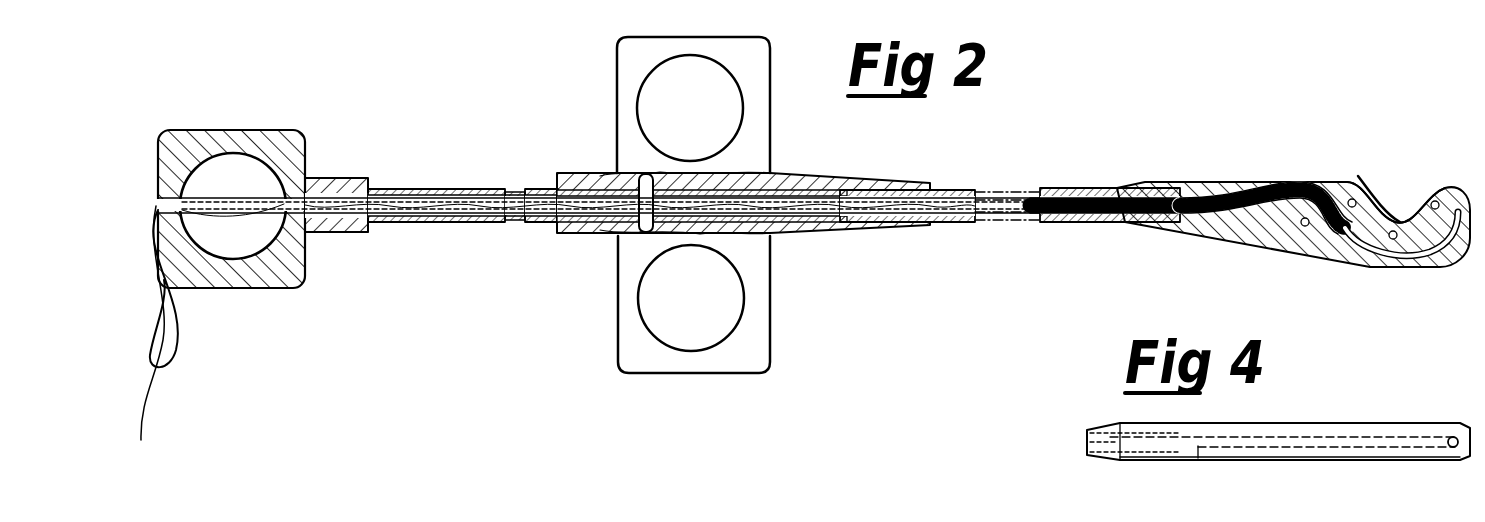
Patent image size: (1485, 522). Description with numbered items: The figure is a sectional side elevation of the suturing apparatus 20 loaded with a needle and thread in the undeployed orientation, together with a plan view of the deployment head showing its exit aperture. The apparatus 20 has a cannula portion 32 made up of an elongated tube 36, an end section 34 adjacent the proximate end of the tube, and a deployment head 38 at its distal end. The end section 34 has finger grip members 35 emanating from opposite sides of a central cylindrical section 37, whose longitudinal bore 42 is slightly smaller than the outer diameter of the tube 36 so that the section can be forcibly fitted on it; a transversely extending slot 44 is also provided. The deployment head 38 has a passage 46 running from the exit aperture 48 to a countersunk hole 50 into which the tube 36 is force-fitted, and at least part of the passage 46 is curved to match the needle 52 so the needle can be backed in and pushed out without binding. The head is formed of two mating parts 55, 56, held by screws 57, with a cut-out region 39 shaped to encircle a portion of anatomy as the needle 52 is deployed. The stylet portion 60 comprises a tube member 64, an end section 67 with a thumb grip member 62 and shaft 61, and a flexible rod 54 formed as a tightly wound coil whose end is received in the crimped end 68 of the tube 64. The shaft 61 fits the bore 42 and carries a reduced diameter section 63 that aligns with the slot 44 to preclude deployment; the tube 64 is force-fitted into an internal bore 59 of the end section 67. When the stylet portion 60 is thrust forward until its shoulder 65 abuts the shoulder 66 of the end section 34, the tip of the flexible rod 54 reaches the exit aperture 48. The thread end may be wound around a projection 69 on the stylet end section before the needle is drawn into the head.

In FIG. 2, the apparatus 20 is at (422, 343).
In FIG. 2, the cannula portion 32 is at (998, 142).
In FIG. 2, the end section 34 is at (596, 138).
In FIG. 2, the finger grip members 35 is at (770, 150).
In FIG. 2, the elongated tube 36 is at (953, 190).
In FIG. 2, the cylindrical section 37 is at (846, 233).
In FIG. 2, the deployment head 38 is at (1226, 181).
In FIG. 2, the cut-out region 39 is at (1400, 196).
In FIG. 2, the bore 42 is at (822, 229).
In FIG. 2, the slot 44 is at (640, 230).
In FIG. 2, the passage 46 is at (1300, 186).
In FIG. 2, the exit aperture 48 is at (1458, 186).
In FIG. 4, the exit aperture 48 is at (1453, 437).
In FIG. 2, the countersunk hole 50 is at (1150, 224).
In FIG. 2, the needle 52 is at (1376, 262).
In FIG. 2, the flexible rod 54 is at (1262, 245).
In FIG. 4, the part 55 is at (1360, 460).
In FIG. 4, the part 56 is at (1285, 428).
In FIG. 2, the screws 57 is at (1362, 176).
In FIG. 2, the internal bore 59 is at (175, 134).
In FIG. 2, the stylet portion 60 is at (440, 230).
In FIG. 2, the shaft 61 is at (432, 190).
In FIG. 2, the thumb grip member 62 is at (222, 288).
In FIG. 2, the reduced diameter section 63 is at (512, 223).
In FIG. 2, the tube member 64 is at (782, 235).
In FIG. 2, the shoulder 65 is at (372, 236).
In FIG. 2, the shoulder 66 is at (545, 225).
In FIG. 2, the end section 67 is at (320, 278).
In FIG. 2, the end 68 is at (1046, 190).
In FIG. 2, the projection 69 is at (168, 350).